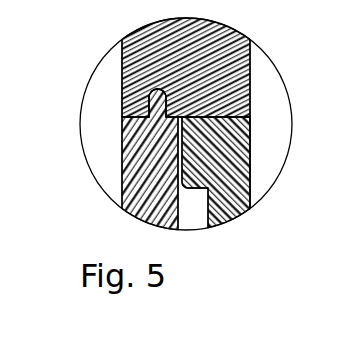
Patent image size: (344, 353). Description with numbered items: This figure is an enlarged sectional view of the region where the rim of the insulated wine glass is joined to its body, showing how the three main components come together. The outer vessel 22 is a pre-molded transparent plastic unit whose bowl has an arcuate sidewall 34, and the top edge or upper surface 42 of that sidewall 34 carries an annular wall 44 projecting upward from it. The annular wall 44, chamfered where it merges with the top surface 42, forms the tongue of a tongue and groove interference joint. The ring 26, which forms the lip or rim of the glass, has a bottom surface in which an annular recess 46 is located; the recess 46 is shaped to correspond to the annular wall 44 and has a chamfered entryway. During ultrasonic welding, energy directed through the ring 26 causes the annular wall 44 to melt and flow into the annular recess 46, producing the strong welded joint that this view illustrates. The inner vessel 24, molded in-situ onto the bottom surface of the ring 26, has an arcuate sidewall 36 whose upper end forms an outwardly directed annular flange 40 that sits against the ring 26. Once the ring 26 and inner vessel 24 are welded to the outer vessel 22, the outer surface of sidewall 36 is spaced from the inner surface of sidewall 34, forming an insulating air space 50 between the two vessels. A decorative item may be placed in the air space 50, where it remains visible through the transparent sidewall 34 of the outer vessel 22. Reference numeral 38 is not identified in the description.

The outer vessel 22 is at (140, 199).
The inner vessel 24 is at (242, 195).
The ring 26 is at (148, 51).
The sidewall 34 is at (140, 169).
The sidewall 36 is at (233, 222).
The interface surface 38 is at (238, 102).
The annular flange 40 is at (243, 118).
The top surface 42 is at (122, 123).
The annular wall 44 is at (148, 104).
The annular recess 46 is at (143, 84).
The insulating air space 50 is at (188, 203).